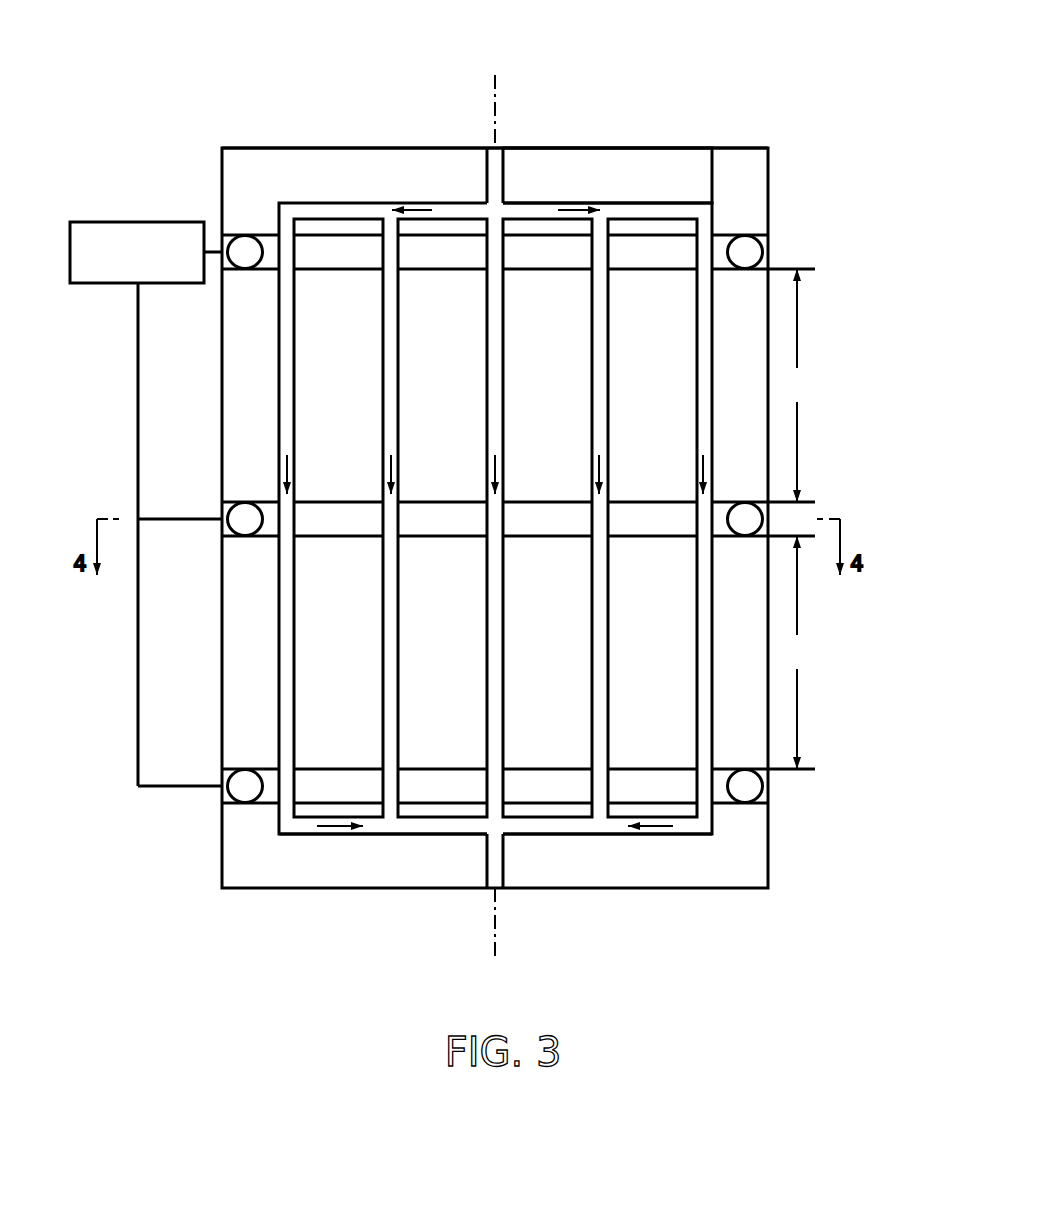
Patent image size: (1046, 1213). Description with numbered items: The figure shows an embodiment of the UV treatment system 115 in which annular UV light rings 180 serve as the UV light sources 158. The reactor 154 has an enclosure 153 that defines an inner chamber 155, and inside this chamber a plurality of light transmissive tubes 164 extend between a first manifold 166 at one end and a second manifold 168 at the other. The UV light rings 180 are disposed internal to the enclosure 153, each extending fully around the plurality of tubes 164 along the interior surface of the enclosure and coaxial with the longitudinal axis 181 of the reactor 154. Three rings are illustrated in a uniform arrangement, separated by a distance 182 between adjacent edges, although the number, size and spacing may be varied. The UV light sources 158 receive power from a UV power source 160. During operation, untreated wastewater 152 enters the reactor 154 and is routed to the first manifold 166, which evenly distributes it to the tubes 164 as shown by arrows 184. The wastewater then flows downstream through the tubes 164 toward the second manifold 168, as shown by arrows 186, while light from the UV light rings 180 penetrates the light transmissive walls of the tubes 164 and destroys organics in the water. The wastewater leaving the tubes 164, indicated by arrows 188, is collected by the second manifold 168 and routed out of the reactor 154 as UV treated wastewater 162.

The UV treatment system 115 is at (648, 34).
The wastewater 152 is at (495, 195).
The enclosure 153 is at (695, 148).
The reactor 154 is at (740, 146).
The inner chamber 155 is at (626, 158).
The UV light source 158 is at (234, 236).
The UV power source 160 is at (140, 222).
The UV treated wastewater 162 is at (495, 882).
The light transmissive tubes 164 is at (399, 650).
The first manifold 166 is at (660, 203).
The second manifold 168 is at (553, 836).
The UV light rings 180 is at (245, 232).
The longitudinal axis 181 is at (497, 922).
The distance 182 is at (800, 519).
The arrows 184 is at (428, 208).
The arrows 186 is at (290, 462).
The arrows 188 is at (340, 830).